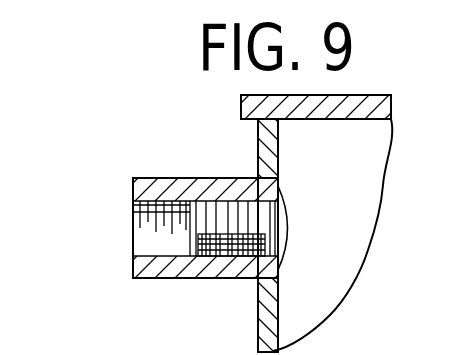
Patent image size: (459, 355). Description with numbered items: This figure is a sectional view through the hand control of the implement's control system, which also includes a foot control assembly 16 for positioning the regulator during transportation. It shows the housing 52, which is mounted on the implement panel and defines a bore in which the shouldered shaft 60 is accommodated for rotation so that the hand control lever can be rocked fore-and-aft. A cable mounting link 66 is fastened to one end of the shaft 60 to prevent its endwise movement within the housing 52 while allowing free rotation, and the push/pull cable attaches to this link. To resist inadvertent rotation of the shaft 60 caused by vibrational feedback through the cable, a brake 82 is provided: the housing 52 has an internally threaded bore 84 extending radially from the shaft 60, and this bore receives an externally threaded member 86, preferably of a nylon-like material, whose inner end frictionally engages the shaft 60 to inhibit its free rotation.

The foot control assembly 16 is at (122, 158).
The housing 52 is at (257, 310).
The shouldered shaft 60 is at (348, 217).
The cable mounting link 66 is at (359, 95).
The brake 82 is at (203, 281).
The internally threaded bore 84 is at (160, 205).
The externally threaded member 86 is at (243, 214).